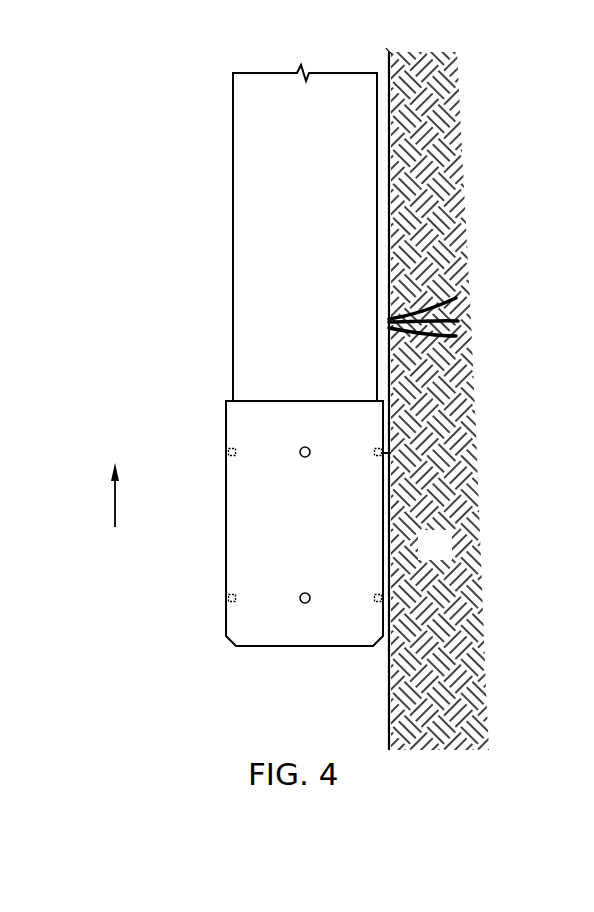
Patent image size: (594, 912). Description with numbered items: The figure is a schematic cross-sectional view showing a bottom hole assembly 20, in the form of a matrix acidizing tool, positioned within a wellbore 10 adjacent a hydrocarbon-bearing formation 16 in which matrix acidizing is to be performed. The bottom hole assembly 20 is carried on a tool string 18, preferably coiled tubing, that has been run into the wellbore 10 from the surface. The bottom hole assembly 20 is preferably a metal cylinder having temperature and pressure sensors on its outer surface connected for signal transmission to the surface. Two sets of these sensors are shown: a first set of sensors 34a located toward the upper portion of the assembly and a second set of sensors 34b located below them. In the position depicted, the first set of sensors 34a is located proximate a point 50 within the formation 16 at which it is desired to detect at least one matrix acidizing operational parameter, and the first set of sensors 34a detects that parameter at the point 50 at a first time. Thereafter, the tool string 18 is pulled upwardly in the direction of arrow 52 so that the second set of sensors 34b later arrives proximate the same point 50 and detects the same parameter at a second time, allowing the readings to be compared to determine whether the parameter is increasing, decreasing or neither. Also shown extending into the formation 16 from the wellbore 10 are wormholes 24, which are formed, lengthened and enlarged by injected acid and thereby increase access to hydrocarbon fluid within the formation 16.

The wellbore 10 is at (392, 156).
The hydrocarbon-bearing formation 16 is at (448, 556).
The tool string 18 is at (245, 187).
The bottom hole assembly 20 is at (240, 522).
The wormholes 24 is at (456, 302).
The first set of sensors 34a is at (378, 447).
The second set of sensors 34b is at (377, 604).
The point 50 is at (391, 453).
The arrow 52 is at (115, 500).